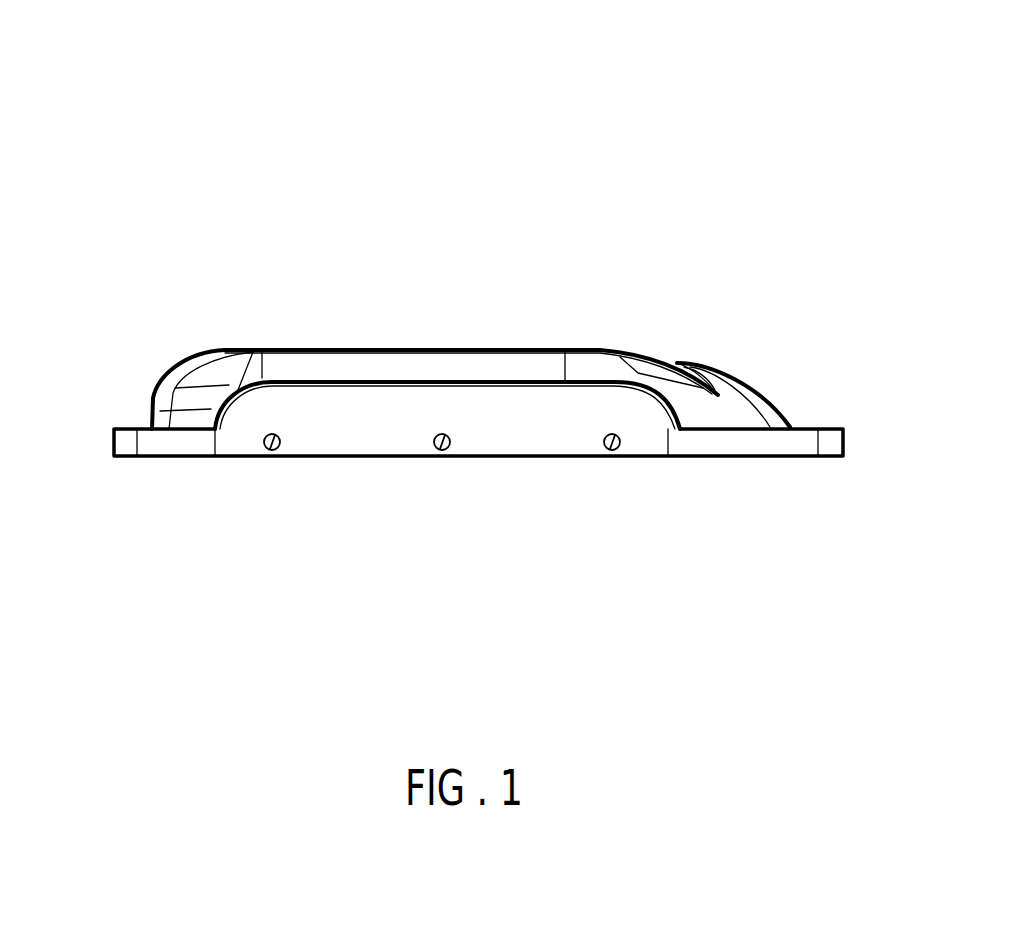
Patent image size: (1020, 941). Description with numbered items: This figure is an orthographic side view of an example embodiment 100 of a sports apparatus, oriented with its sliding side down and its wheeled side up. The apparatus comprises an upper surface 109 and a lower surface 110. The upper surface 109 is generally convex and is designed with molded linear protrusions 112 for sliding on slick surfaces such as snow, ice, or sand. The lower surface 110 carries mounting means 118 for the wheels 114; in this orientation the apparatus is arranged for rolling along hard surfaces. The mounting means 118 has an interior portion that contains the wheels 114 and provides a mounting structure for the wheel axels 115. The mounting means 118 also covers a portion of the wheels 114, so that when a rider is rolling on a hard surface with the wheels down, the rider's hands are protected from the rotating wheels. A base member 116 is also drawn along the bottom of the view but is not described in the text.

The sports apparatus embodiment 100 is at (100, 78).
The upper surface 109 is at (215, 320).
The lower surface 110 is at (172, 507).
The molded linear protrusions 112 is at (680, 359).
The wheels 114 is at (272, 493).
The wheel axels 115 is at (268, 433).
The base plate 116 is at (780, 450).
The mounting means 118 is at (343, 428).